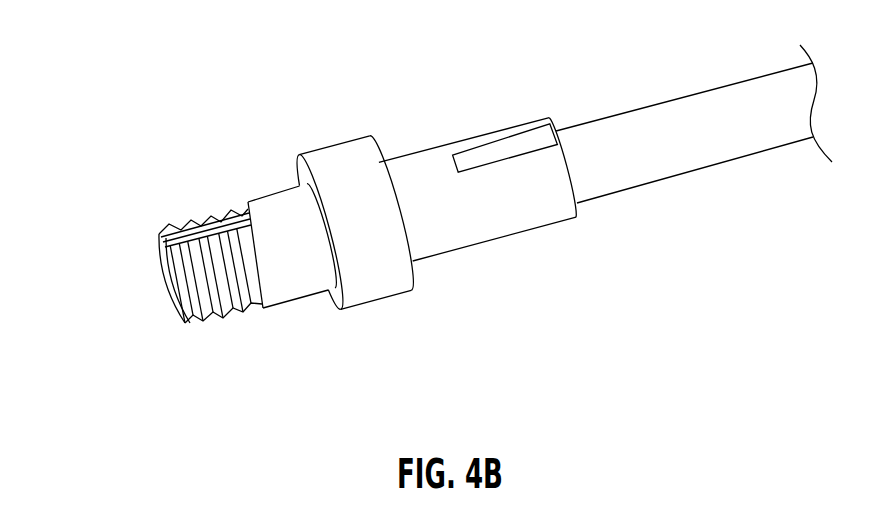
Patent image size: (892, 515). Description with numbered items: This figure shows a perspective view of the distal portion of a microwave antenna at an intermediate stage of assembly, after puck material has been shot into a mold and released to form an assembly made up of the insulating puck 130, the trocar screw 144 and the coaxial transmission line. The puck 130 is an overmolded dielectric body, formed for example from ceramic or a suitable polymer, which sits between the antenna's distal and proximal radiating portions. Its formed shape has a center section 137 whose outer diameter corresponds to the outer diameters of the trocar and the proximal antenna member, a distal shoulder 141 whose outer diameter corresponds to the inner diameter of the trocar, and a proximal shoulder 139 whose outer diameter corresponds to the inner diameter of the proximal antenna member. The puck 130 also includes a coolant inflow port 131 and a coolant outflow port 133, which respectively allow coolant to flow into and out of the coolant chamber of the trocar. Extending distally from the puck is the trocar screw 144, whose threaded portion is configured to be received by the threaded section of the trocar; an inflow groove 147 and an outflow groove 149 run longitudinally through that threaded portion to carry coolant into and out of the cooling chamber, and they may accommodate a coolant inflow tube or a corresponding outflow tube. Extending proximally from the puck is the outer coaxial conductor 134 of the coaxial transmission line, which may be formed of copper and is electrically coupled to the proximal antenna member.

The insulating puck 130 is at (332, 144).
The coolant inflow port 131 is at (505, 150).
The coolant outflow port 133 is at (530, 230).
The outer coaxial conductor 134 is at (777, 72).
The center section 137 is at (378, 294).
The proximal shoulder 139 is at (457, 230).
The distal shoulder 141 is at (290, 296).
The trocar screw 144 is at (208, 212).
The inflow groove 147 is at (160, 233).
The outflow groove 149 is at (228, 310).